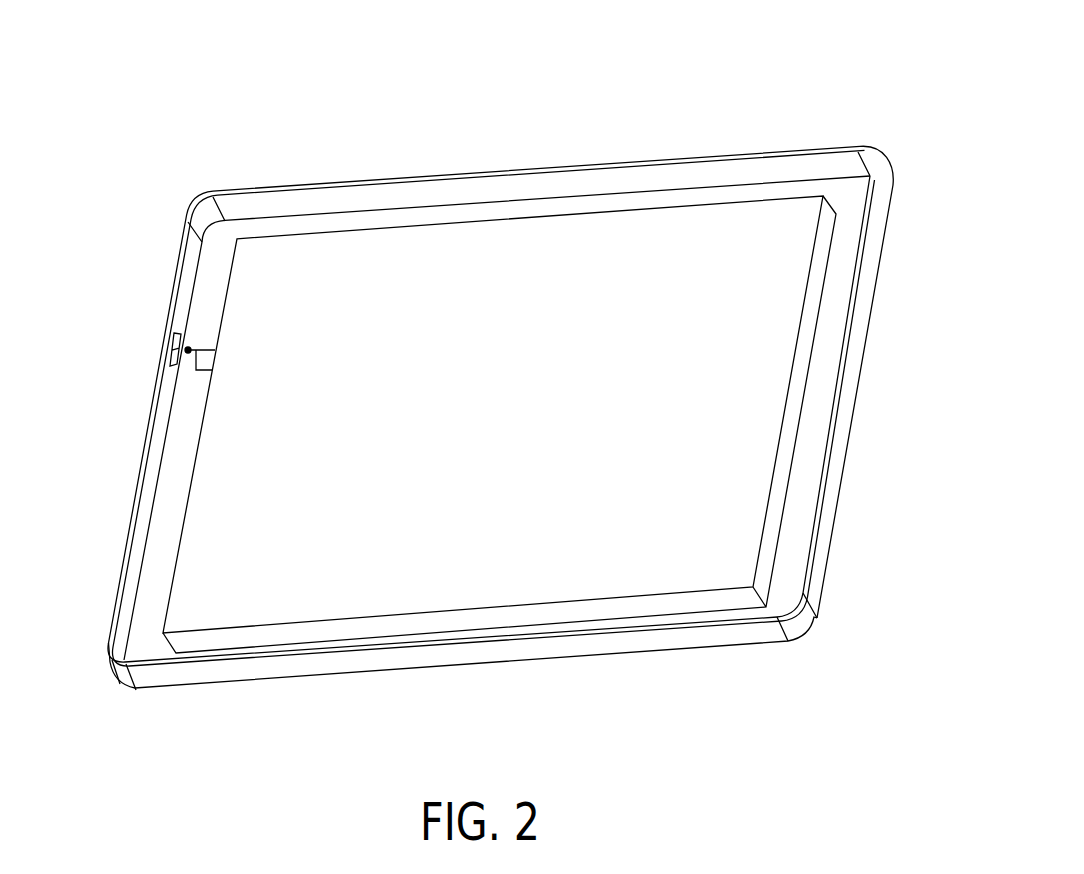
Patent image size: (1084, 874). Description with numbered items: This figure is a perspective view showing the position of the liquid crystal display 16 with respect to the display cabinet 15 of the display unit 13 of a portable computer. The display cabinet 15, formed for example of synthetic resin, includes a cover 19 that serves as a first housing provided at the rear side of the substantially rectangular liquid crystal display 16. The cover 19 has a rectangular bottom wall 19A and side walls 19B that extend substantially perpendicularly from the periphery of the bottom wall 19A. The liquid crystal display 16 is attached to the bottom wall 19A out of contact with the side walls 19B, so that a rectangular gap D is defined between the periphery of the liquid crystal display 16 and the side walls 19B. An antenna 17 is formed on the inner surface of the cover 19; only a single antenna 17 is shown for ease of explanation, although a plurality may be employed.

The display unit 13 is at (665, 123).
The display cabinet 15 is at (803, 150).
The liquid crystal display 16 is at (563, 232).
The antenna 17 is at (165, 348).
The cover 19 is at (868, 340).
The bottom wall 19A is at (220, 233).
The side walls 19B is at (483, 192).
The rectangular gap D is at (353, 214).